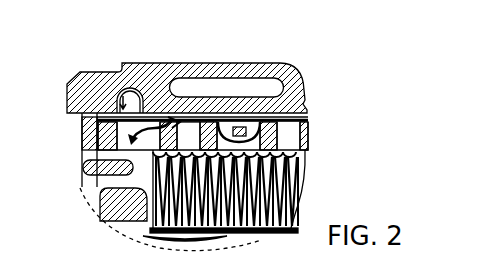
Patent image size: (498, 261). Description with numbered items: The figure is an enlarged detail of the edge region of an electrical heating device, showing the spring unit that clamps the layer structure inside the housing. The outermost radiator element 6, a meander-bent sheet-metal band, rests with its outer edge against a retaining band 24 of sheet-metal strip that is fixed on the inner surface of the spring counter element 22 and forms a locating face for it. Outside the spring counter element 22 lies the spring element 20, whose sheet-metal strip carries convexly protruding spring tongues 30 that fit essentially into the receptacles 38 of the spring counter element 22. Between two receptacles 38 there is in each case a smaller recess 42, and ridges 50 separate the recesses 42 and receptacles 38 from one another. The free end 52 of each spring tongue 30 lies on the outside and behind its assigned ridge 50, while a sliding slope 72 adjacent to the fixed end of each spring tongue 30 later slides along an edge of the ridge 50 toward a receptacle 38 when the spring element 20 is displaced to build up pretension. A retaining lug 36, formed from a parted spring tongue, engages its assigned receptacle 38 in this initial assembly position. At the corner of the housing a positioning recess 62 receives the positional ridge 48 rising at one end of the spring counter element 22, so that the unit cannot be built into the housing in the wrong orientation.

The radiator element 6 is at (290, 184).
The spring element 20 is at (307, 112).
The spring counter element 22 is at (308, 140).
The retaining band 24 is at (303, 150).
The spring tongue 30 is at (235, 158).
The retaining lug 36 is at (156, 130).
The receptacle 38 is at (147, 113).
The recess 42 is at (185, 118).
The positional ridge 48 is at (83, 132).
The ridge 50 is at (100, 192).
The free end 52 is at (219, 112).
The positioning recess 62 is at (113, 107).
The sliding slope 72 is at (277, 130).